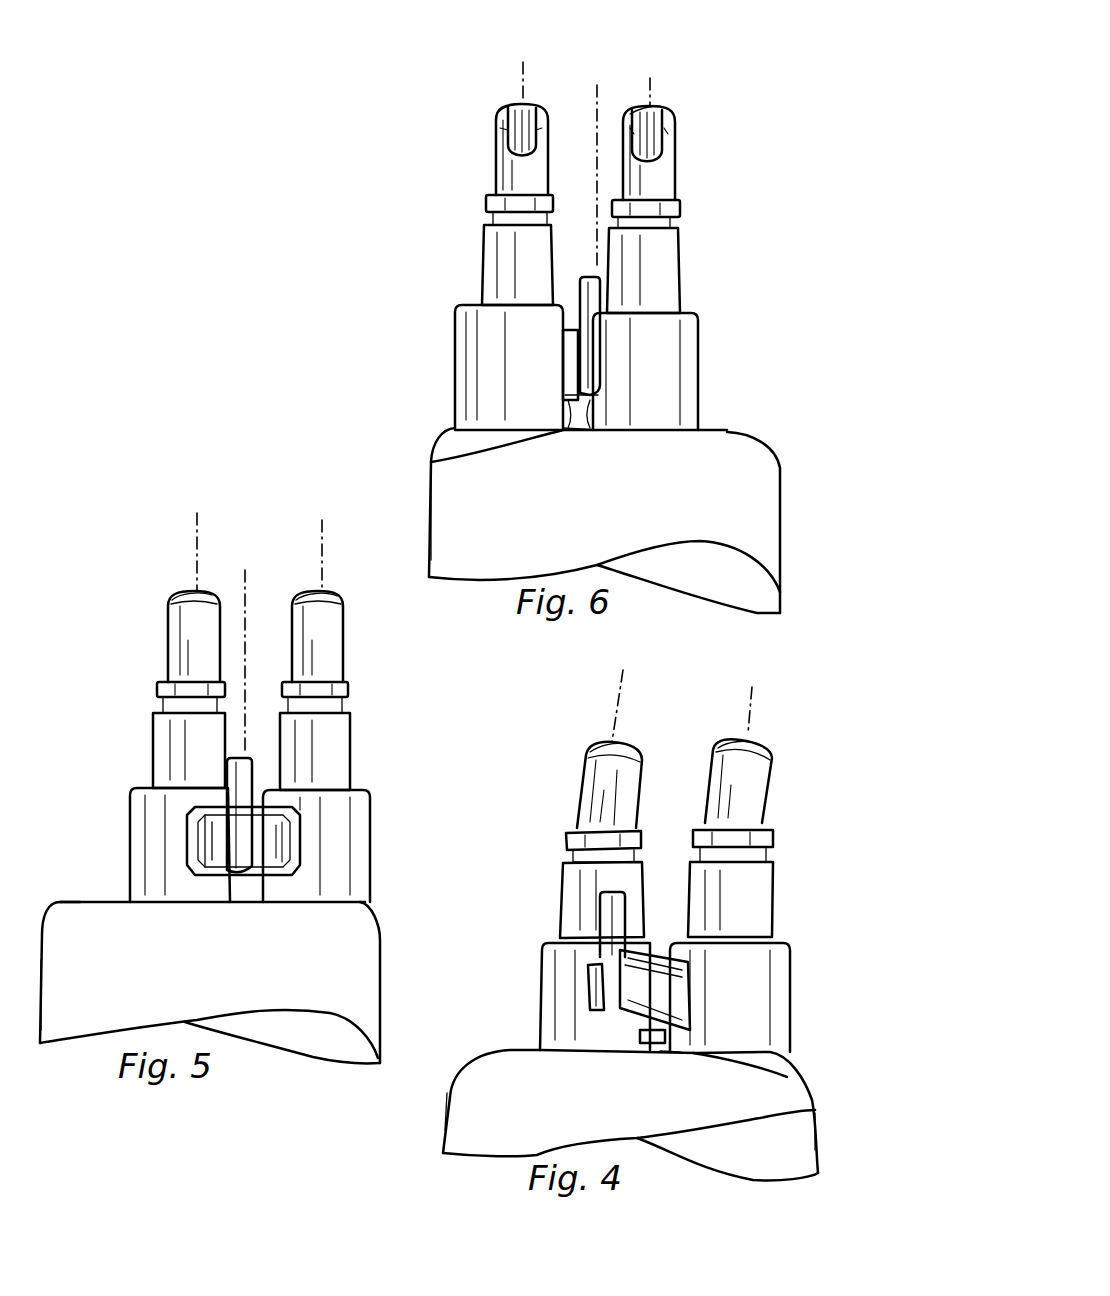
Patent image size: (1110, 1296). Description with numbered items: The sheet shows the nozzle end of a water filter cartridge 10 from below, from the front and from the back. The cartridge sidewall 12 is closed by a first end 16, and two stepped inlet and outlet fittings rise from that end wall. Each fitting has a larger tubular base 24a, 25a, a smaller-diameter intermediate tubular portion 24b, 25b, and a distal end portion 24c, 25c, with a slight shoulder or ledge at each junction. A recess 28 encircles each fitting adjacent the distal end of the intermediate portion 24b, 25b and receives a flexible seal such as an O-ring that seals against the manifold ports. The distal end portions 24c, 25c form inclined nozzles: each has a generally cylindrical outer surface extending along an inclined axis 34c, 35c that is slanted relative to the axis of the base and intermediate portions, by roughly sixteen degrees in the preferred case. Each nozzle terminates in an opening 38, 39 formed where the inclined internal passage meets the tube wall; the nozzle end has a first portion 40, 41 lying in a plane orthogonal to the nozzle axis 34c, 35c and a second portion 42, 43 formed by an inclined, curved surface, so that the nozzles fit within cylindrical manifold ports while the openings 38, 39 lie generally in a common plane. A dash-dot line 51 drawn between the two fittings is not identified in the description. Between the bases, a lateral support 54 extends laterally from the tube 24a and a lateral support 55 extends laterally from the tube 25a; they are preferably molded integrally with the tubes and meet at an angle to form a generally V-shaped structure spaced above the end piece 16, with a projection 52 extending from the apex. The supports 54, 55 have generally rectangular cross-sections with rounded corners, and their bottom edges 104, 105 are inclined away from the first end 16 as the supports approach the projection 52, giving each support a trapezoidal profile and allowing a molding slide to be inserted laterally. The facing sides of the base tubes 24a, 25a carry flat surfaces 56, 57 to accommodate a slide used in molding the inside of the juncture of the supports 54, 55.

In FIG. 6, the water filter cartridge 10 is at (878, 470).
In FIG. 5, the water filter cartridge 10 is at (329, 1070).
In FIG. 4, the water filter cartridge 10 is at (821, 1099).
In FIG. 6, the cartridge sidewall 12 is at (782, 520).
In FIG. 5, the cartridge sidewall 12 is at (375, 988).
In FIG. 4, the cartridge sidewall 12 is at (447, 1132).
In FIG. 6, the first end 16 is at (728, 436).
In FIG. 5, the first end 16 is at (107, 903).
In FIG. 4, the first end 16 is at (514, 1049).
In FIG. 6, the tubular base 24a is at (492, 336).
In FIG. 5, the tubular base 24a is at (360, 887).
In FIG. 4, the tubular base 24a is at (787, 958).
In FIG. 6, the intermediate tubular portion 24b is at (506, 255).
In FIG. 5, the intermediate tubular portion 24b is at (350, 732).
In FIG. 4, the intermediate tubular portion 24b is at (770, 915).
In FIG. 6, the distal end portion 24c is at (497, 178).
In FIG. 5, the distal end portion 24c is at (338, 657).
In FIG. 4, the distal end portion 24c is at (763, 797).
In FIG. 6, the tubular base 25a is at (688, 366).
In FIG. 5, the tubular base 25a is at (163, 807).
In FIG. 4, the tubular base 25a is at (553, 1012).
In FIG. 6, the intermediate tubular portion 25b is at (670, 271).
In FIG. 5, the intermediate tubular portion 25b is at (177, 742).
In FIG. 4, the intermediate tubular portion 25b is at (578, 885).
In FIG. 6, the distal end portion 25c is at (670, 175).
In FIG. 5, the distal end portion 25c is at (173, 628).
In FIG. 4, the distal end portion 25c is at (593, 778).
In FIG. 6, the recess 28 is at (488, 218).
In FIG. 5, the recess 28 is at (163, 700).
In FIG. 4, the recess 28 is at (575, 857).
In FIG. 6, the inclined axis 34c is at (533, 72).
In FIG. 5, the inclined axis 34c is at (330, 550).
In FIG. 4, the inclined axis 34c is at (760, 700).
In FIG. 6, the inclined axis 35c is at (657, 80).
In FIG. 5, the inclined axis 35c is at (200, 515).
In FIG. 4, the inclined axis 35c is at (617, 685).
In FIG. 6, the opening 38 is at (516, 112).
In FIG. 6, the opening 39 is at (642, 112).
In FIG. 6, the outer surface 40 is at (512, 110).
In FIG. 5, the outer surface 40 is at (337, 603).
In FIG. 4, the outer surface 40 is at (760, 748).
In FIG. 6, the outer surface 41 is at (673, 117).
In FIG. 5, the outer surface 41 is at (187, 595).
In FIG. 4, the outer surface 41 is at (603, 745).
In FIG. 6, the second end portion 42 is at (500, 145).
In FIG. 6, the second end portion 43 is at (672, 131).
In FIG. 6, the central axis 51 is at (600, 85).
In FIG. 5, the central axis 51 is at (248, 577).
In FIG. 4, the central axis 51 is at (617, 803).
In FIG. 6, the projection 52 is at (598, 296).
In FIG. 5, the projection 52 is at (250, 779).
In FIG. 4, the projection 52 is at (610, 918).
In FIG. 6, the lateral support 54 is at (567, 357).
In FIG. 5, the lateral support 54 is at (268, 844).
In FIG. 4, the lateral support 54 is at (657, 984).
In FIG. 5, the lateral support 55 is at (210, 834).
In FIG. 4, the lateral support 55 is at (593, 984).
In FIG. 6, the flat surface 56 is at (437, 458).
In FIG. 6, the flat surface 57 is at (590, 422).
In FIG. 4, the bottom edge 104 is at (657, 1040).
In FIG. 4, the bottom edge 105 is at (610, 1005).